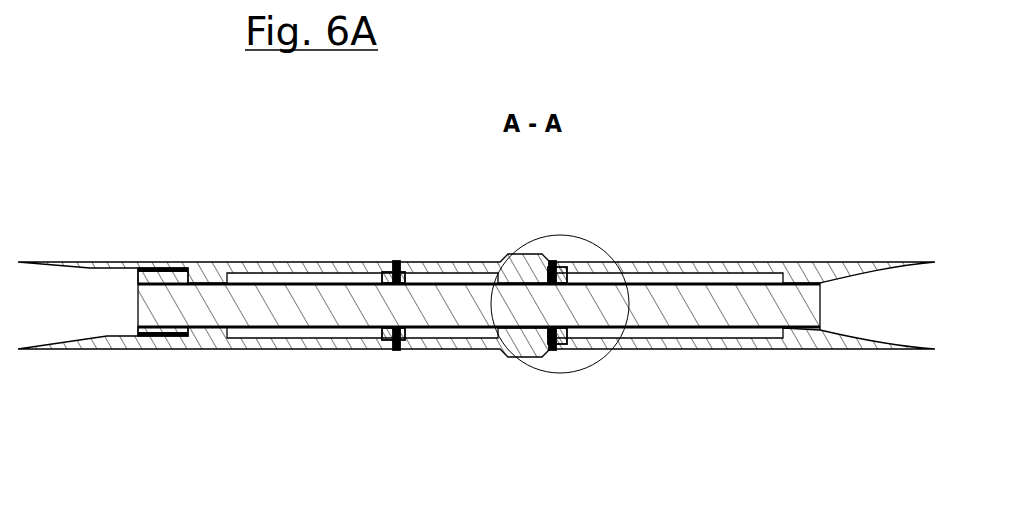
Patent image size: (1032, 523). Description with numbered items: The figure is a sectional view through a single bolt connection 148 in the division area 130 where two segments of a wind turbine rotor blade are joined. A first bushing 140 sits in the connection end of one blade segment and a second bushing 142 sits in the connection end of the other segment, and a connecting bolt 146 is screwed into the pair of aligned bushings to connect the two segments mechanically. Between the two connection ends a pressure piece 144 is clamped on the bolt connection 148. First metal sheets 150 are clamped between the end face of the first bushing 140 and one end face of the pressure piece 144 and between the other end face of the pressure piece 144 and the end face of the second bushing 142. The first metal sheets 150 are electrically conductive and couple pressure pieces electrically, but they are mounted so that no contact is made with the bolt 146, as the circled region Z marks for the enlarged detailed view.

The division area 130 is at (443, 222).
The first bushing 140 is at (218, 262).
The second bushing 142 is at (808, 262).
The pressure piece 144 is at (445, 318).
The connecting bolt 146 is at (700, 305).
The bolt connection 148 is at (723, 222).
The first metal sheet 150 is at (397, 262).
The detailed view Z is at (592, 362).